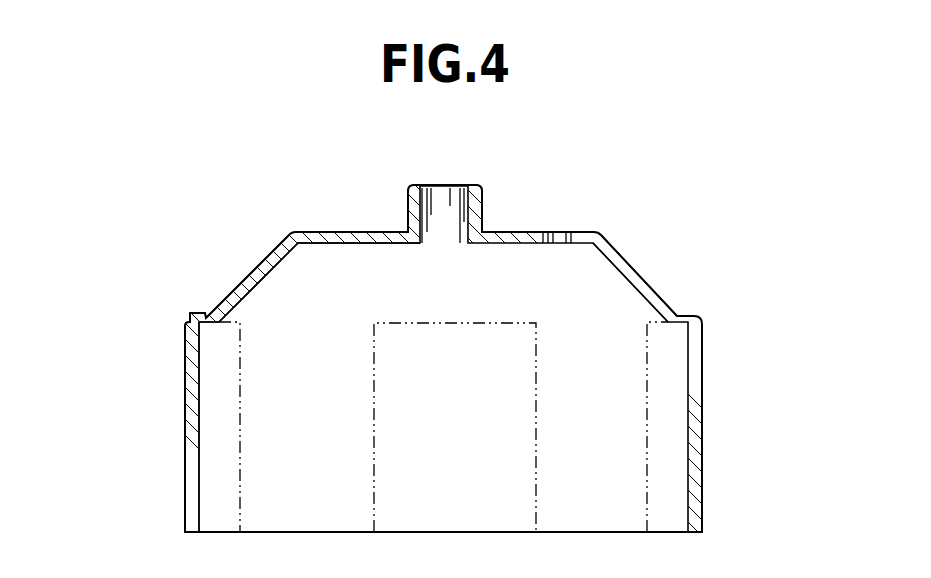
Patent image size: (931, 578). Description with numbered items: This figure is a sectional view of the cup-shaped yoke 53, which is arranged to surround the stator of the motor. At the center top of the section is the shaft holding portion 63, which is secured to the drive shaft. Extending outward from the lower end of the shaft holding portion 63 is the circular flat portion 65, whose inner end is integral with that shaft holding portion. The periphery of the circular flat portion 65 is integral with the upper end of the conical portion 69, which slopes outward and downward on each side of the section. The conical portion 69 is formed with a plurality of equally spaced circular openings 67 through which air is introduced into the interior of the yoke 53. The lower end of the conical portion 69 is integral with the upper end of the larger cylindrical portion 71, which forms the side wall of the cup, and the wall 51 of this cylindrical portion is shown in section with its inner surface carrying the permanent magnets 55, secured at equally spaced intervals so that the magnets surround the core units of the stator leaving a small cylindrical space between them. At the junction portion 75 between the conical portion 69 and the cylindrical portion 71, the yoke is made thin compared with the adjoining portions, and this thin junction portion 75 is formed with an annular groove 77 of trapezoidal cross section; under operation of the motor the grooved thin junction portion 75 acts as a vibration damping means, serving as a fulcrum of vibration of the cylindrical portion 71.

The cylindrical body wall 51 is at (210, 367).
The yoke 53 is at (609, 226).
The permanent magnets 55 is at (390, 431).
The shaft holding portion 63 is at (482, 200).
The circular flat portion 65 is at (331, 232).
The circular openings 67 is at (641, 277).
The conical portion 69 is at (255, 268).
The larger cylindrical portion 71 is at (186, 427).
The junction portion 75 is at (197, 313).
The annular groove 77 is at (207, 316).